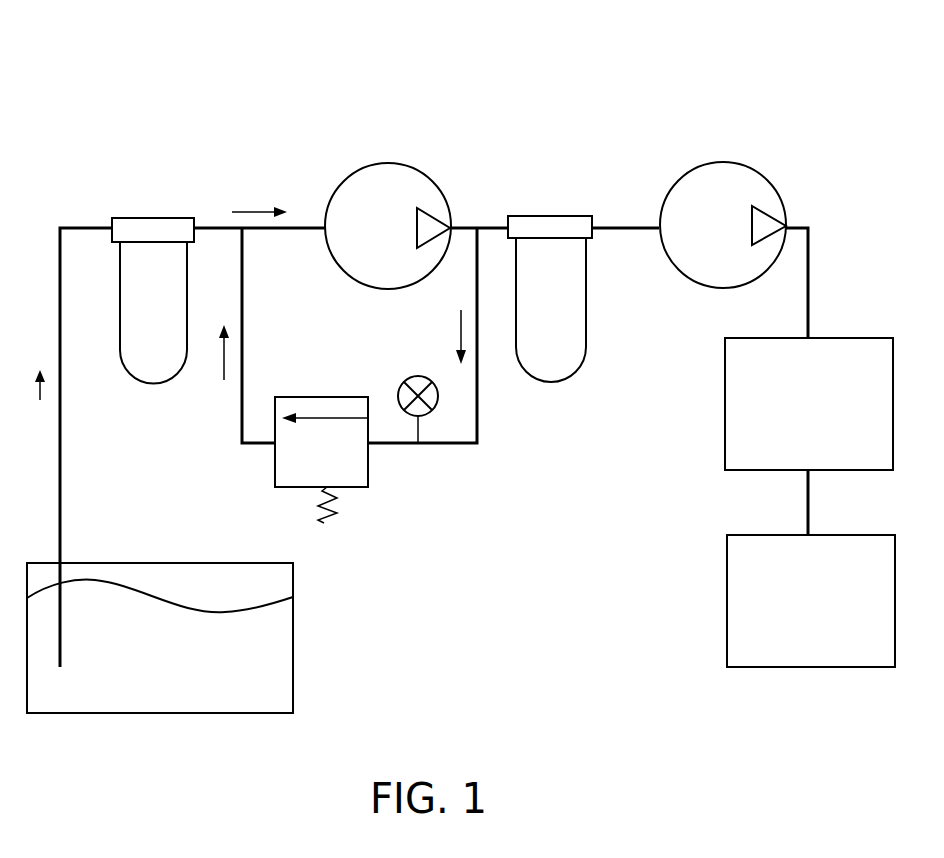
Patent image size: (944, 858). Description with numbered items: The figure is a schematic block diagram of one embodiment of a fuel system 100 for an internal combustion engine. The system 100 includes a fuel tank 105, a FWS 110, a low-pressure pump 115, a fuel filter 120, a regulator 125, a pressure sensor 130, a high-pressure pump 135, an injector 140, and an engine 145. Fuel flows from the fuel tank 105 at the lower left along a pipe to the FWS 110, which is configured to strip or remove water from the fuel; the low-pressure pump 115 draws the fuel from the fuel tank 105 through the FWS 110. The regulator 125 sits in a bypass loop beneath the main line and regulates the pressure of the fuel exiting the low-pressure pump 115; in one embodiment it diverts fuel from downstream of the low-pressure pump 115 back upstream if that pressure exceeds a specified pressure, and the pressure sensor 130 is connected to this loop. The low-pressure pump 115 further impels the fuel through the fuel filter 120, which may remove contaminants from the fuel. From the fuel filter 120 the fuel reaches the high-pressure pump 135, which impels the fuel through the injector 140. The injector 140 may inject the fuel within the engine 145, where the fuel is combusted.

The fuel system 100 is at (86, 75).
The fuel tank 105 is at (142, 661).
The FWS 110 is at (112, 225).
The low-pressure pump 115 is at (348, 180).
The fuel filter 120 is at (508, 217).
The regulator 125 is at (348, 397).
The pressure sensor 130 is at (410, 382).
The high-pressure pump 135 is at (680, 178).
The injector 140 is at (791, 429).
The engine 145 is at (793, 626).